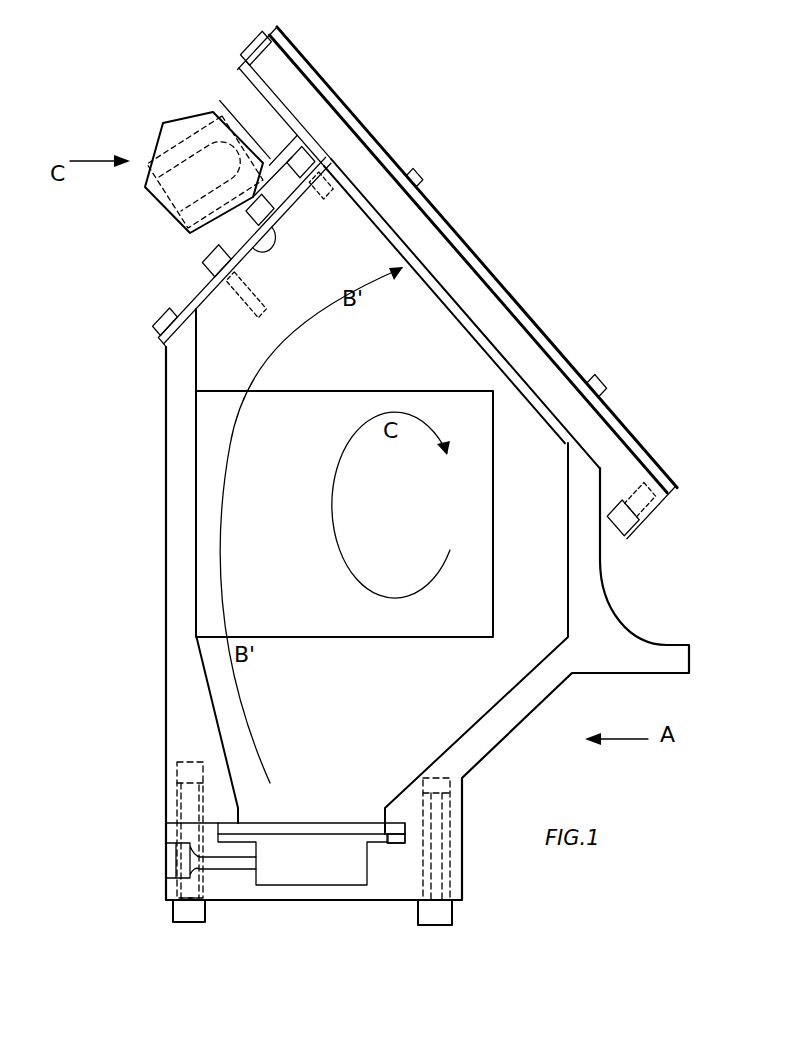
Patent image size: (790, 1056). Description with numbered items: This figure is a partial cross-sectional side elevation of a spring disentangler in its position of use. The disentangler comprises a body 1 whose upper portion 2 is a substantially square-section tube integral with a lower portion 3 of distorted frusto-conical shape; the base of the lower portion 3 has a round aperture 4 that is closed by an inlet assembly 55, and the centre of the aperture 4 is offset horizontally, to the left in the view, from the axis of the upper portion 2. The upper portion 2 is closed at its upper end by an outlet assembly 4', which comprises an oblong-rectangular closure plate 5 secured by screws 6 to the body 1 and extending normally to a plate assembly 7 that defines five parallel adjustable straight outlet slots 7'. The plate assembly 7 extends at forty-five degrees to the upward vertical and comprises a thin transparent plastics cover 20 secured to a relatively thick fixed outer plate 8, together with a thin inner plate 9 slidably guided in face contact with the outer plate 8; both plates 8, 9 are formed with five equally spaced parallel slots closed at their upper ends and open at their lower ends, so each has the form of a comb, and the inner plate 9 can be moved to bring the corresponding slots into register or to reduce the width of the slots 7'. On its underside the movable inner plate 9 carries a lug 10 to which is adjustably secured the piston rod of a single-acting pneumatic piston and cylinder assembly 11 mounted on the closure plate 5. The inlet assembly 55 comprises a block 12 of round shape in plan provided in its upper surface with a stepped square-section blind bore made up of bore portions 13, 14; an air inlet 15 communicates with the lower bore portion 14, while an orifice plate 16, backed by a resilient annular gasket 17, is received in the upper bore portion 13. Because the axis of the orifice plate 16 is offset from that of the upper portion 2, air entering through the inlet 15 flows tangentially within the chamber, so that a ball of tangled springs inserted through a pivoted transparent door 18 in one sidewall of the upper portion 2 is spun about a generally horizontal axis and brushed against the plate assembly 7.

The body 1 is at (178, 540).
The upper portion 2 is at (183, 463).
The lower portion 3 is at (490, 730).
The round aperture 4 is at (229, 773).
The outlet assembly 4' is at (458, 268).
The closure plate 5 is at (202, 303).
The screws 6 is at (160, 322).
The plate assembly 7 is at (469, 264).
The outlet slots 7' is at (402, 255).
The fixed outer plate 8 is at (490, 307).
The inner plate 9 is at (490, 343).
The lug 10 is at (230, 97).
The pneumatic piston and cylinder assembly 11 is at (175, 205).
The block 12 is at (442, 885).
The bore portion 13 is at (405, 830).
The bore portion 14 is at (362, 860).
The air inlet 15 is at (231, 862).
The orifice plate 16 is at (315, 830).
The resilient annular gasket 17 is at (396, 843).
The pivoted transparent door 18 is at (466, 510).
The transparent plastics cover 20 is at (435, 203).
The inlet assembly 55 is at (296, 912).